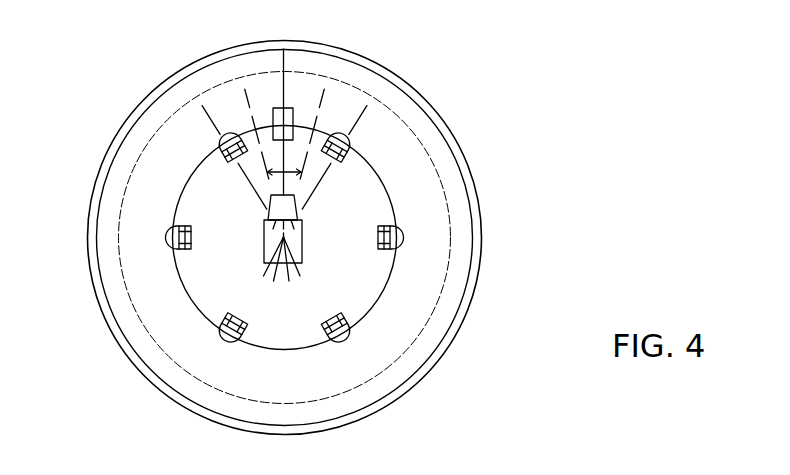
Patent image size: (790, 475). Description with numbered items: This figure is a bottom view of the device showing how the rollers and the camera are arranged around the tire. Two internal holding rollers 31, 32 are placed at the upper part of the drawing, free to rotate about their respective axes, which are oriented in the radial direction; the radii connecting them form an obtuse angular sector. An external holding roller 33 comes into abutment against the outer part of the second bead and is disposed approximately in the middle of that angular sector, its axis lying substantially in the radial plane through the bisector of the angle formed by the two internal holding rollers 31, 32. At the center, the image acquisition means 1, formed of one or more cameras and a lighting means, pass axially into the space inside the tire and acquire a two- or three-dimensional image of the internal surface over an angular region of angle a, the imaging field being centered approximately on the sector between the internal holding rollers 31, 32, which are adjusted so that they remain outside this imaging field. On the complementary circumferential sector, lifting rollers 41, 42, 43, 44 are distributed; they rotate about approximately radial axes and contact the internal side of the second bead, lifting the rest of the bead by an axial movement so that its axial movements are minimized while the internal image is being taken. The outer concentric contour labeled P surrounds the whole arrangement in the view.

The image acquisition means 1 is at (303, 245).
The internal holding roller 31 is at (218, 136).
The internal holding roller 32 is at (342, 130).
The external holding roller 33 is at (292, 107).
The lifting roller 41 is at (406, 230).
The lifting roller 42 is at (344, 343).
The lifting roller 43 is at (226, 346).
The lifting roller 44 is at (158, 240).
The pipe P is at (462, 277).
The angle of the angular region a is at (284, 134).